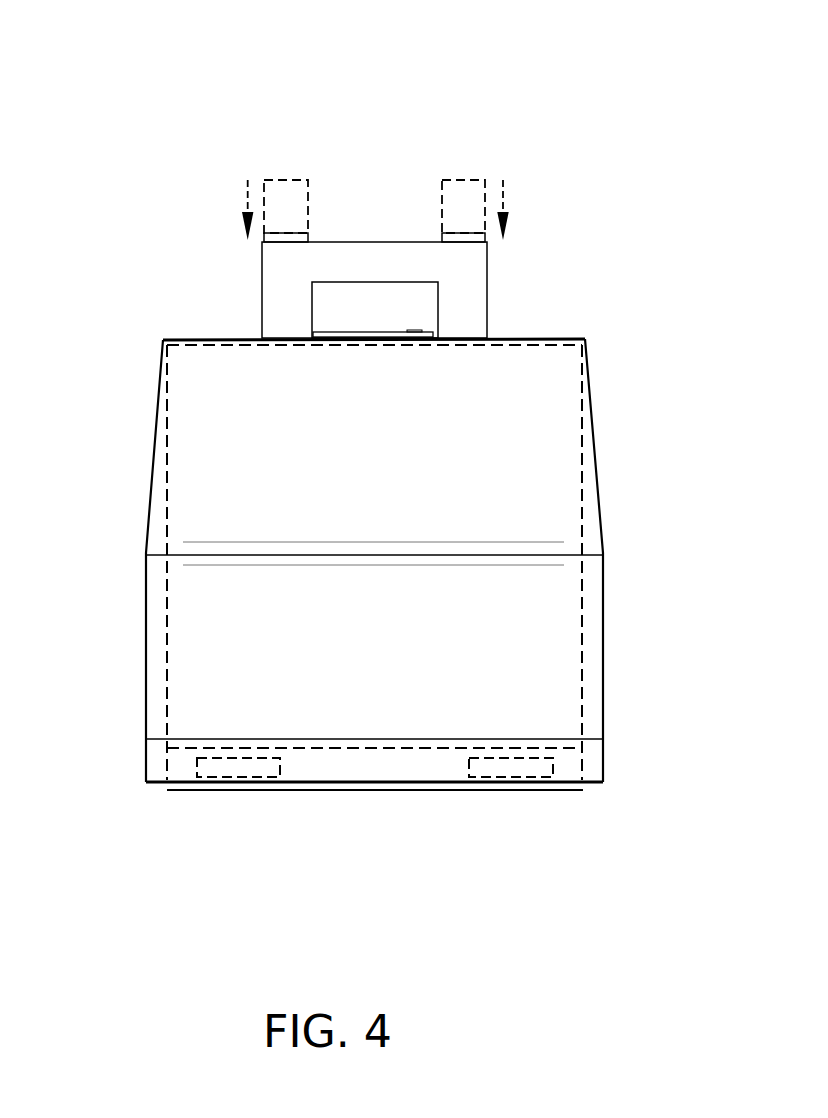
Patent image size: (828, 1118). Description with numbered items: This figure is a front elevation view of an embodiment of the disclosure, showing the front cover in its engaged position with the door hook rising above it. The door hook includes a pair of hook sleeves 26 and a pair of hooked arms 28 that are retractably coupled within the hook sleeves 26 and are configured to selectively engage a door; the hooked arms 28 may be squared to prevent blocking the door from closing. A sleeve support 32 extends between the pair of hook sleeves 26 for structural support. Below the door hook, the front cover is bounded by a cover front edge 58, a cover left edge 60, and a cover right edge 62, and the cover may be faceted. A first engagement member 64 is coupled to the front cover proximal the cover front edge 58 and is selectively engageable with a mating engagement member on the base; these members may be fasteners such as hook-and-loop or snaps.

The hook sleeves 26 is at (455, 297).
The hooked arms 28 is at (462, 235).
The sleeve support 32 is at (363, 255).
The cover front edge 58 is at (589, 785).
The cover left edge 60 is at (147, 669).
The cover right edge 62 is at (603, 668).
The first engagement member 64 is at (247, 768).